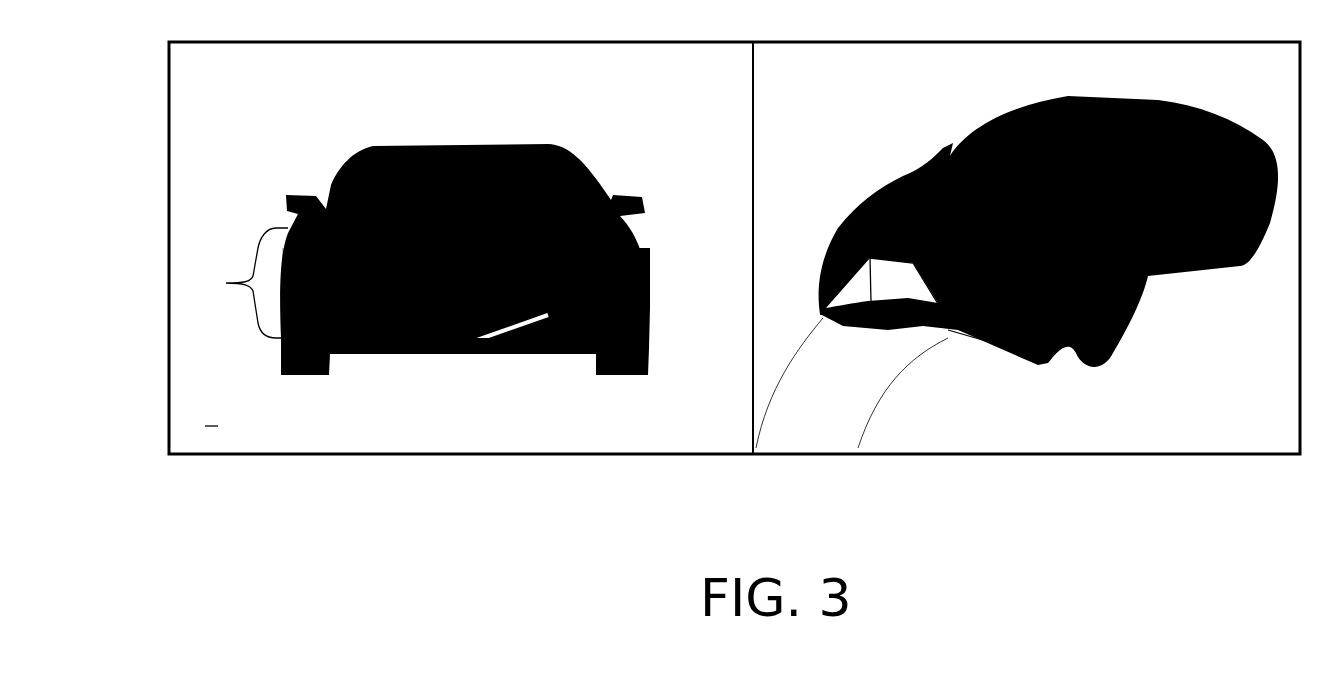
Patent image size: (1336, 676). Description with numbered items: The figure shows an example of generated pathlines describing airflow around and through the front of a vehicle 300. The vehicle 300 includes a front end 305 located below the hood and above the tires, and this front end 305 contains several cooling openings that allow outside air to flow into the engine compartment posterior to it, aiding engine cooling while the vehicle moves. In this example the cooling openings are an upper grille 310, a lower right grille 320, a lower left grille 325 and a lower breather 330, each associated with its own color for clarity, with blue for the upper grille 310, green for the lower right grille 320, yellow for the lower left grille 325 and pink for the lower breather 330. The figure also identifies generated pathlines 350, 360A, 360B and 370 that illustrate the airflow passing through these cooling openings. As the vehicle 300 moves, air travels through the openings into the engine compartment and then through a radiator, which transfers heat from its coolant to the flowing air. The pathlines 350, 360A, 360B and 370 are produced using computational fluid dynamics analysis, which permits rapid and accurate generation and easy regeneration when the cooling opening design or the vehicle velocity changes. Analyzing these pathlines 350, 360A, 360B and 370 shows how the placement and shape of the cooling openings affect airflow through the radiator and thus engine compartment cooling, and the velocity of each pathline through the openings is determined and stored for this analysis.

The vehicle 300 is at (390, 130).
The front end 305 is at (233, 283).
The upper grille 310 is at (492, 240).
The lower right grille 320 is at (440, 343).
The lower left grille 325 is at (643, 294).
The lower breather 330 is at (517, 335).
The pathline 350 is at (892, 263).
The pathline 360A is at (815, 308).
The pathline 360B is at (978, 339).
The pathline 370 is at (900, 339).